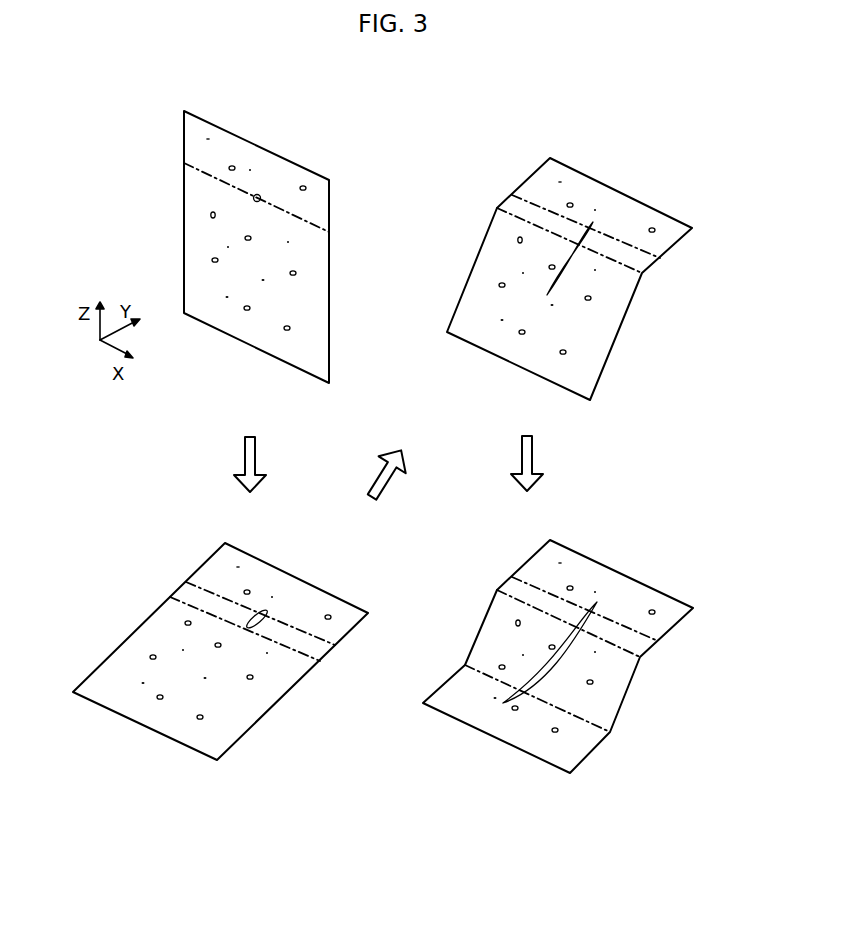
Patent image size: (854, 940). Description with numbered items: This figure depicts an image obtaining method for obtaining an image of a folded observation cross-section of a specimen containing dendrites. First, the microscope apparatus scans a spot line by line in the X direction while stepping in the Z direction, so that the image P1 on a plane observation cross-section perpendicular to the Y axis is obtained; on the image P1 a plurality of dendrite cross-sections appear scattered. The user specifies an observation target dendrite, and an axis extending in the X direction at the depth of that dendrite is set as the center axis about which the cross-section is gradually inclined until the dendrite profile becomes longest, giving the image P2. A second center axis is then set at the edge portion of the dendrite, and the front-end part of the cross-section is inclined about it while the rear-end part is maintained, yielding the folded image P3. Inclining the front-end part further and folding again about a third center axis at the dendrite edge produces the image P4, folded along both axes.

The image on plane observation cross-section P1 is at (232, 134).
The image of inclined observation cross-section P2 is at (258, 559).
The image of folded observation cross-section P3 is at (582, 174).
The image of doubly folded observation cross-section P4 is at (580, 555).